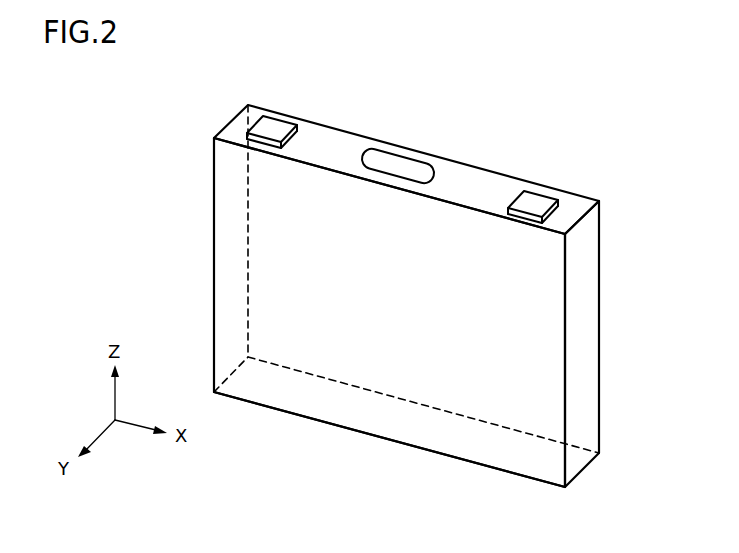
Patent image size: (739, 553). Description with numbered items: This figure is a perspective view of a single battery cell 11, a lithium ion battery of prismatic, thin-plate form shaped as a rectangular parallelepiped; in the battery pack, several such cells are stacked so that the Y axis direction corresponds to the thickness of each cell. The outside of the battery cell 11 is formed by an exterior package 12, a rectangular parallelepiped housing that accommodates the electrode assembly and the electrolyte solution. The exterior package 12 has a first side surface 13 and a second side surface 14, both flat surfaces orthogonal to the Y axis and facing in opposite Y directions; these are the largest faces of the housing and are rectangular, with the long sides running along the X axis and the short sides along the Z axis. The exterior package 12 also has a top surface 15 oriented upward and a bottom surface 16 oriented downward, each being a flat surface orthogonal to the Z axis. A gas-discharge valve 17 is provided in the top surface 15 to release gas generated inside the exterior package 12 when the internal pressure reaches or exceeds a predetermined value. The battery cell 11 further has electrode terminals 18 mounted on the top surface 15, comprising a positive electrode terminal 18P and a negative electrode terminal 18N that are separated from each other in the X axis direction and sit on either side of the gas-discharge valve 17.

The battery cell 11 is at (222, 88).
The exterior package 12 is at (603, 408).
The first side surface 13 is at (497, 395).
The second side surface 14 is at (550, 330).
The top surface 15 is at (460, 180).
The bottom surface 16 is at (407, 420).
The gas-discharge valve 17 is at (376, 160).
The electrode terminals 18 is at (400, 143).
The negative electrode terminal 18N is at (270, 128).
The positive electrode terminal 18P is at (537, 200).